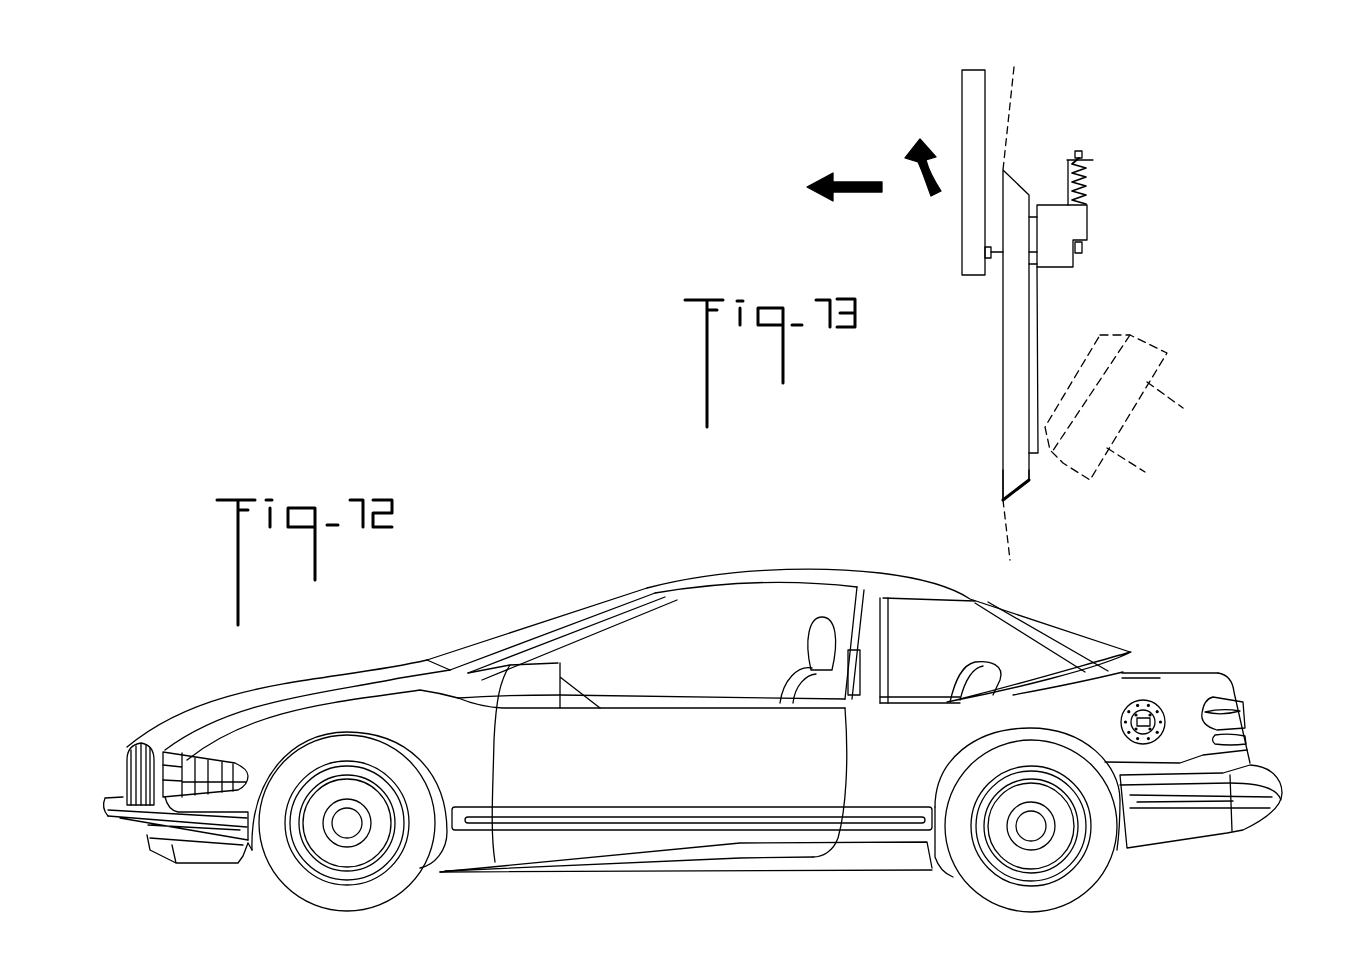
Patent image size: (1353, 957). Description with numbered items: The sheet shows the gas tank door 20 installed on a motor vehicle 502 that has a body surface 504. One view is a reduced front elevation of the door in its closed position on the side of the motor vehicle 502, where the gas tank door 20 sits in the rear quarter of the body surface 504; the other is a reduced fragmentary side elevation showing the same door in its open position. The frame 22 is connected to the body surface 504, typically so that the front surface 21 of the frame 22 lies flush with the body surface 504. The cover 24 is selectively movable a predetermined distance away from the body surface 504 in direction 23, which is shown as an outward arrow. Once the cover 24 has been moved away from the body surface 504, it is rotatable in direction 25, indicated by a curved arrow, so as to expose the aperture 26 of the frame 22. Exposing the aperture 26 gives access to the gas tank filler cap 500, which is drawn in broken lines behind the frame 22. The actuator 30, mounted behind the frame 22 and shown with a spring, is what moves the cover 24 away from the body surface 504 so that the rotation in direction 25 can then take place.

In FIG. 13, the gas tank door 20 is at (927, 124).
In FIG. 12, the gas tank door 20 is at (1170, 692).
In FIG. 13, the front surface 21 is at (1002, 482).
In FIG. 13, the frame 22 is at (1015, 490).
In FIG. 13, the direction 23 is at (862, 182).
In FIG. 13, the cover 24 is at (962, 266).
In FIG. 13, the direction 25 is at (923, 192).
In FIG. 13, the aperture 26 is at (1010, 378).
In FIG. 13, the actuator 30 is at (1106, 213).
In FIG. 13, the gas tank filler cap 500 is at (1130, 335).
In FIG. 12, the motor vehicle 502 is at (506, 590).
In FIG. 13, the body surface 504 is at (1010, 83).
In FIG. 12, the body surface 504 is at (1107, 720).